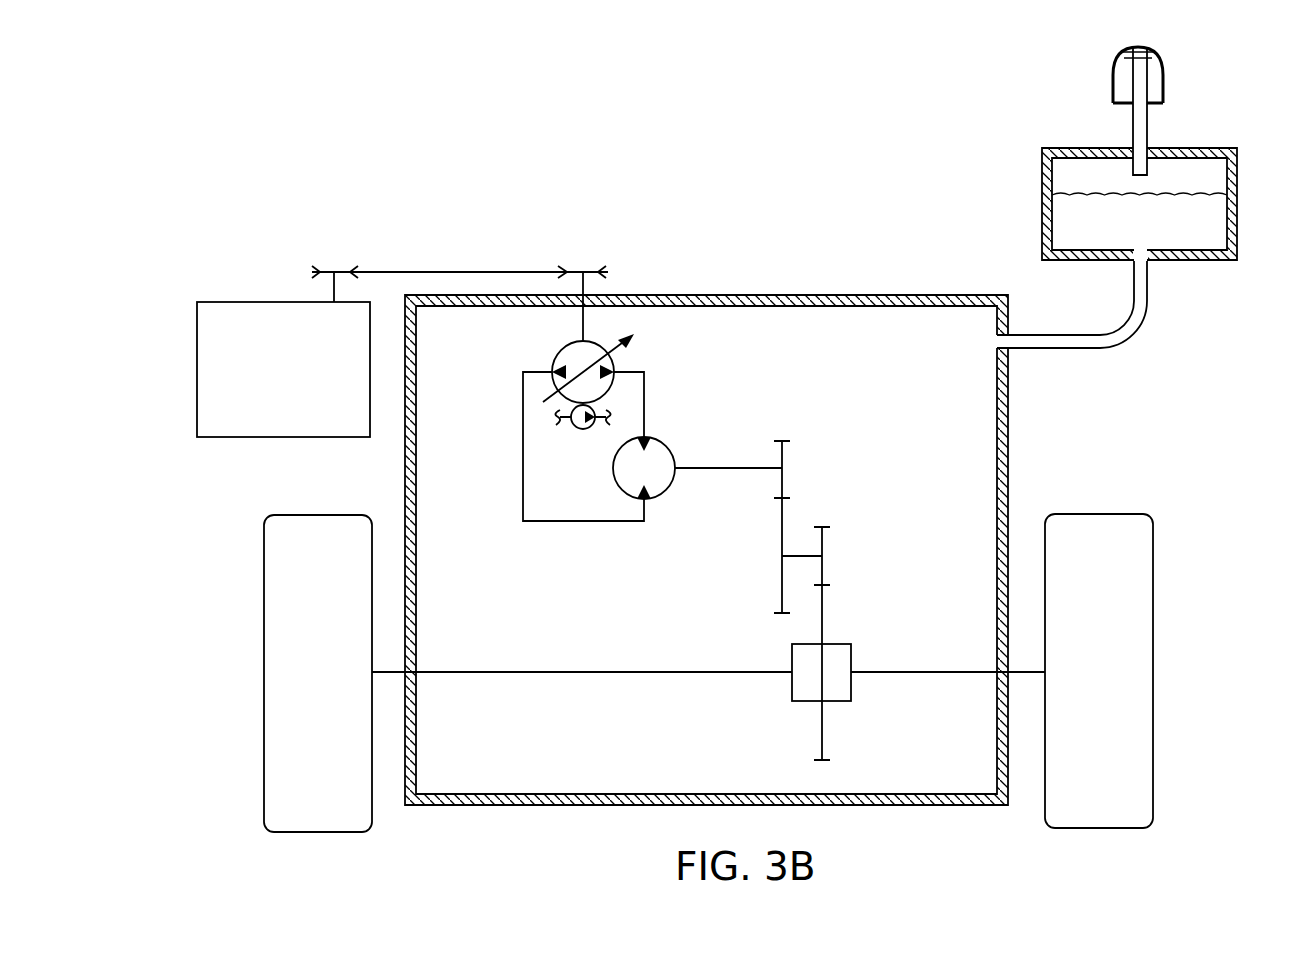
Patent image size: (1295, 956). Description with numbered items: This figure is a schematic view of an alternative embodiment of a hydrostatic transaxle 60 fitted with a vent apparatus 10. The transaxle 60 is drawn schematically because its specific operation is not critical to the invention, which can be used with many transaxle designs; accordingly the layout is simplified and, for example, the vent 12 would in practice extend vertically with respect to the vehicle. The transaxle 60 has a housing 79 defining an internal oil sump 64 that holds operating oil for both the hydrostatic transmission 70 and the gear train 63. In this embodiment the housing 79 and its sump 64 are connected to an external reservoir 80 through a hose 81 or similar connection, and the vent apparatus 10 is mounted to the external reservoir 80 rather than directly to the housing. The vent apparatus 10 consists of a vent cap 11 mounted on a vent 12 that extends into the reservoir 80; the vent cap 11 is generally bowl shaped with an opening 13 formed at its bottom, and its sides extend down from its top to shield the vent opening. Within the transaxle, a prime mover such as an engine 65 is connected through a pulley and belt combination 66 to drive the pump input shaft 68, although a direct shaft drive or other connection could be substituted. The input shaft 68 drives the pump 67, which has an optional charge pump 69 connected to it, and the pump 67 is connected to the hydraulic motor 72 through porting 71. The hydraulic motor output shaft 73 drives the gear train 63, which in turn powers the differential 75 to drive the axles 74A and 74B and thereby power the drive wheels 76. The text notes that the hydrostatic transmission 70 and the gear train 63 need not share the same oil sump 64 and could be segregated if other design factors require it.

The vent apparatus 10 is at (1094, 67).
The vent cap 11 is at (1165, 79).
The vent 12 is at (1148, 120).
The opening 13 is at (1126, 104).
The transaxle 60 is at (839, 246).
The gear train 63 is at (847, 505).
The oil sump 64 is at (875, 384).
The engine 65 is at (298, 384).
The pulley and belt combination 66 is at (441, 272).
The pump 67 is at (612, 350).
The pump input shaft 68 is at (583, 322).
The charge pump 69 is at (577, 428).
The hydrostatic transmission 70 is at (502, 509).
The porting 71 is at (580, 521).
The hydraulic motor 72 is at (660, 446).
The hydraulic motor output shaft 73 is at (727, 469).
The axle 74A is at (583, 672).
The axle 74B is at (891, 672).
The differential 75 is at (800, 702).
The drive wheels 76 is at (338, 688).
The housing 79 is at (1009, 443).
The external reservoir 80 is at (1238, 218).
The hose 81 is at (1138, 335).